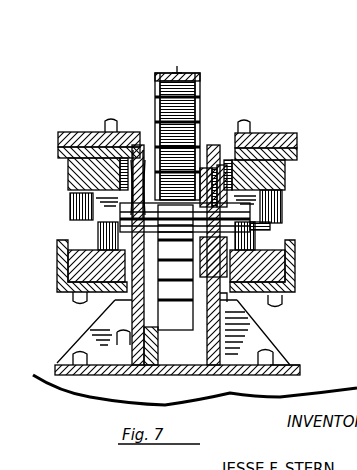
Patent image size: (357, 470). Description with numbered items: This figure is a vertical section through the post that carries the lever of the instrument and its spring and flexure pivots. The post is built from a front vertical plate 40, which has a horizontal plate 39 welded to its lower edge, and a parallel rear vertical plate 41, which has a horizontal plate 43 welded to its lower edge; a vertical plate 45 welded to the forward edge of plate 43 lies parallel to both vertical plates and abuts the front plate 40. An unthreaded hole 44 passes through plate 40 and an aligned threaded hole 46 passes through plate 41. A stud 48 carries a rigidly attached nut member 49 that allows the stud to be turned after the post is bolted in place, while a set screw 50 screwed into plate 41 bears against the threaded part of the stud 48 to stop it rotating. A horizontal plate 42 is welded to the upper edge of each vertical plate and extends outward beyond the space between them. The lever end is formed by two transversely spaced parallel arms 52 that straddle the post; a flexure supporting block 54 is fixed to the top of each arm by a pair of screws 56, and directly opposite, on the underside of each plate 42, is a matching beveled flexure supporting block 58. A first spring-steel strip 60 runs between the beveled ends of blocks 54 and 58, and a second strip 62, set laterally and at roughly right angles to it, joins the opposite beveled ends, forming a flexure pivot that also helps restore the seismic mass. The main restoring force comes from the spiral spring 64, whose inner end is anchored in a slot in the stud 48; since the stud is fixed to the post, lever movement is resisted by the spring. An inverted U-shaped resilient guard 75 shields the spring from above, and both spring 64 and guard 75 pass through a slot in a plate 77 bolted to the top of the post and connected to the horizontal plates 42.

The horizontal plate 39 is at (60, 365).
The front vertical plate 40 is at (133, 312).
The rear vertical plate 41 is at (225, 318).
The horizontal plate 42 is at (70, 153).
The horizontal plate 43 is at (290, 366).
The unthreaded hole 44 is at (120, 215).
The vertical plate 45 is at (158, 350).
The threaded hole 46 is at (270, 226).
The stud 48 is at (203, 165).
The nut member 49 is at (137, 152).
The set screw 50 is at (227, 165).
The arm 52 is at (62, 267).
The flexure supporting block 54 is at (85, 268).
The screw 56 is at (75, 297).
The flexure supporting block 58 is at (80, 175).
The first strip 60 is at (78, 205).
The second strip 62 is at (108, 236).
The spiral spring 64 is at (200, 93).
The guard 75 is at (178, 70).
The plate 77 is at (80, 138).